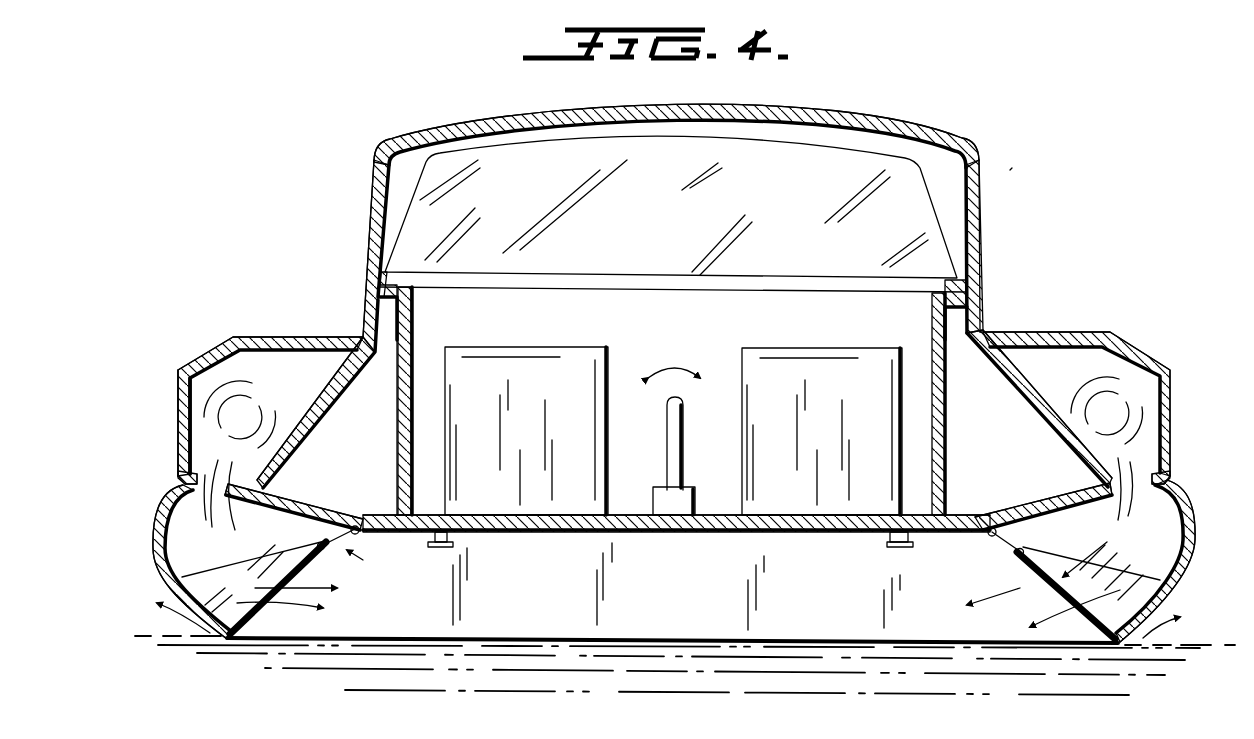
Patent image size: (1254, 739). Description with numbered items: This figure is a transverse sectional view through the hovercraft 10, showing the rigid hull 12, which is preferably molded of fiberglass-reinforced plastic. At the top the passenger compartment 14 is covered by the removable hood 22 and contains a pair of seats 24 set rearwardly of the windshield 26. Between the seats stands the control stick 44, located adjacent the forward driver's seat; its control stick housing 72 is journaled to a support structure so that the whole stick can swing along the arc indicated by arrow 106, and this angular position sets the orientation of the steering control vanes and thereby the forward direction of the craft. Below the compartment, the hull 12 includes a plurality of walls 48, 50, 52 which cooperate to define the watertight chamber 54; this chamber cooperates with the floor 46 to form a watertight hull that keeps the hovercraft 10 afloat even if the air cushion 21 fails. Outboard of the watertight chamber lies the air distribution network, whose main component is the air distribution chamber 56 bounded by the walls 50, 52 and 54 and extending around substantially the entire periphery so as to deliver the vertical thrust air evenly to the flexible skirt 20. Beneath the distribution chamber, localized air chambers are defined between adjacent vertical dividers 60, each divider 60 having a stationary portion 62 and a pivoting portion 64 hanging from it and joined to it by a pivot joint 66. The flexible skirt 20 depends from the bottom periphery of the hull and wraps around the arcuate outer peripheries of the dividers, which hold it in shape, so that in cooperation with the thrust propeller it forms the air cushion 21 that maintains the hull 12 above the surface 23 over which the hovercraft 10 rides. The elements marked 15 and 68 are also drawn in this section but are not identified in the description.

The hovercraft 10 is at (1014, 167).
The rigid hull 12 is at (1172, 428).
The passenger compartment 14 is at (1032, 423).
The right bottom plate 15 is at (1030, 482).
The flexible skirt 20 is at (160, 523).
The air cushion 21 is at (900, 630).
The removable hood 22 is at (913, 124).
The surface 23 is at (760, 708).
The seats 24 is at (538, 347).
The windshield 26 is at (682, 228).
The control stick 44 is at (683, 455).
The floor 46 is at (828, 502).
The wall 48 is at (398, 403).
The wall 50 is at (310, 428).
The wall 52 is at (300, 500).
The watertight chamber 54 is at (178, 405).
The air distribution chamber 56 is at (318, 363).
The vertical dividers 60 is at (362, 534).
The stationary portion 62 is at (185, 543).
The pivoting portion 64 is at (248, 610).
The pivot joint 66 is at (318, 543).
The link rod 68 is at (680, 575).
The control stick housing 72 is at (695, 500).
The arrow 106 is at (700, 343).